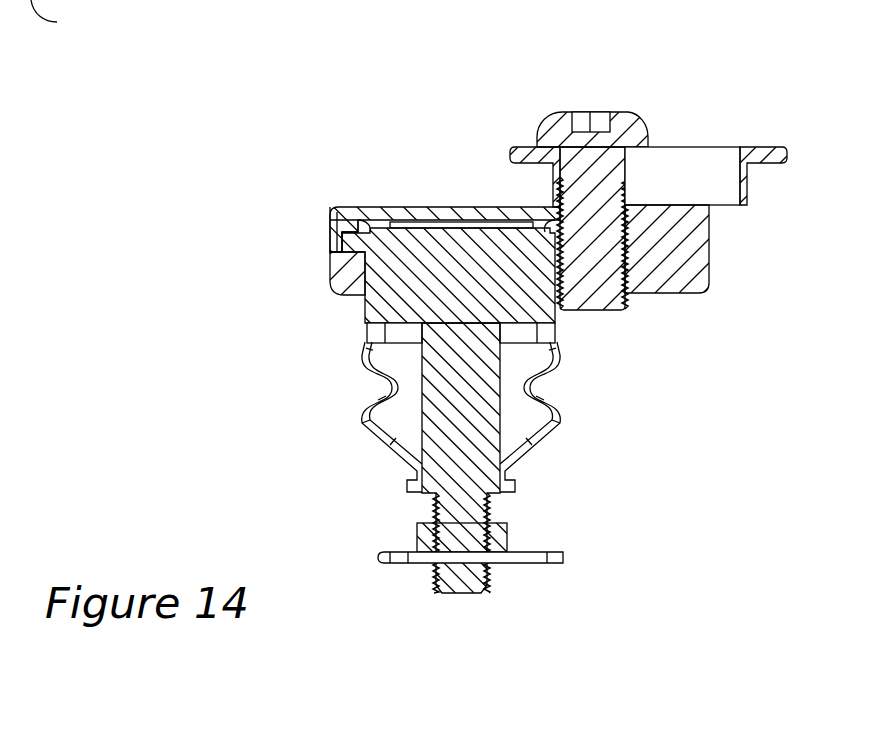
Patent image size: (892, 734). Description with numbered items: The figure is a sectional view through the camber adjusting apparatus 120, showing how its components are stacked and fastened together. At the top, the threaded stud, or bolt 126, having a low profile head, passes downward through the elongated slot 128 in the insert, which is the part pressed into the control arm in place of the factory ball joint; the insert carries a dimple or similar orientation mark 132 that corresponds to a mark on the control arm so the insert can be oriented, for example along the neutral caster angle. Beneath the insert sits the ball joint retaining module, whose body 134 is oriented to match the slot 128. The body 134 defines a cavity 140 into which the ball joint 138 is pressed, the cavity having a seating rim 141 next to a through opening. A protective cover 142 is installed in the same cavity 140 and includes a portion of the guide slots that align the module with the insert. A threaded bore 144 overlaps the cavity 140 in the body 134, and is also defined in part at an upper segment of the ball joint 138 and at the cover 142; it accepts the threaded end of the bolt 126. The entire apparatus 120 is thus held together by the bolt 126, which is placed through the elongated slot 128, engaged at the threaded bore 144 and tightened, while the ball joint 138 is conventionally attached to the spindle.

The adjusting apparatus 120 is at (307, 438).
The threaded stud, or bolt 126 is at (544, 116).
The elongated slot 128 is at (710, 162).
The orientation mark 132 is at (768, 148).
The body 134 is at (709, 292).
The ball joint 138 is at (367, 311).
The cavity 140 is at (346, 208).
The seating rim 141 is at (332, 279).
The protective cover 142 is at (400, 207).
The threaded bore 144 is at (622, 281).